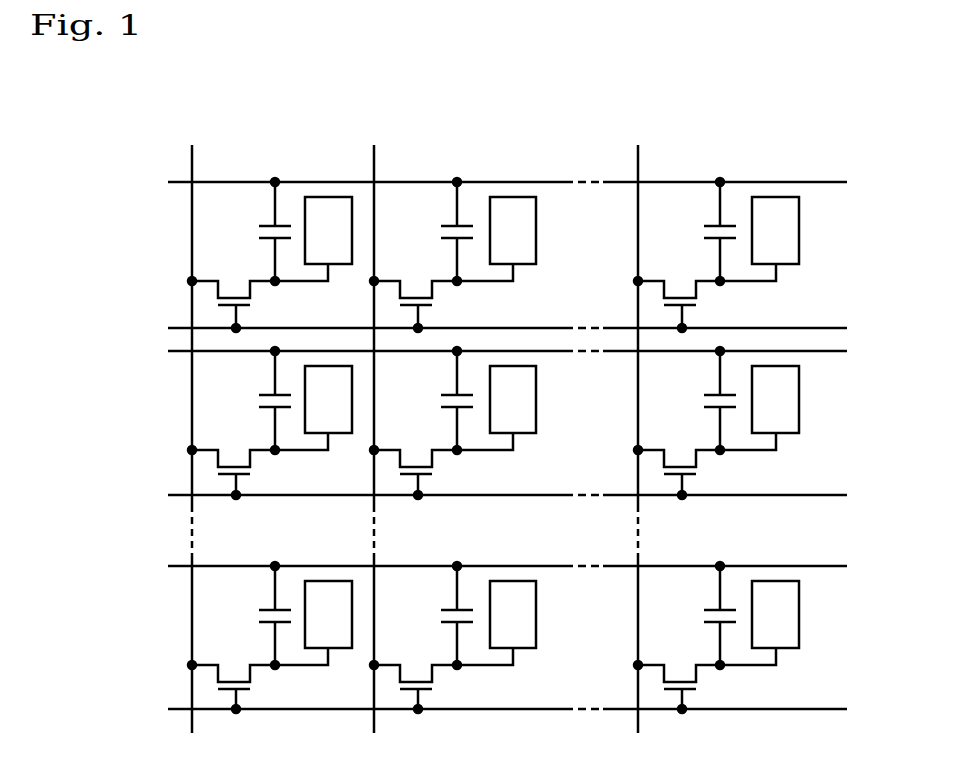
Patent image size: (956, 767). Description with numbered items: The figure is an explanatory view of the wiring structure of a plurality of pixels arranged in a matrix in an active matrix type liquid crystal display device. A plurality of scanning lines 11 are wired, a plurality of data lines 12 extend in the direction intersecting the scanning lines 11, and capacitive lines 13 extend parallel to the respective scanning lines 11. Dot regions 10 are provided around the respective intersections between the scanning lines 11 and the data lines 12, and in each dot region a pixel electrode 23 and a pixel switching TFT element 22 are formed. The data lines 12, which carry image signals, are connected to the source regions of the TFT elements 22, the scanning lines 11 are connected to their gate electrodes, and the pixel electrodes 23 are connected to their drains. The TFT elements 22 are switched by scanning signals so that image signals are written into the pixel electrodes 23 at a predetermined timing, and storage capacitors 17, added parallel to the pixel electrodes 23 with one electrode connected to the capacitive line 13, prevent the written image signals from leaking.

The dot region 10 is at (178, 262).
The scanning line 11 is at (176, 328).
The data line 12 is at (193, 157).
The capacitive line 13 is at (174, 182).
The storage capacitor 17 is at (244, 231).
The pixel switching TFT element 22 is at (272, 302).
The pixel electrode 23 is at (328, 207).